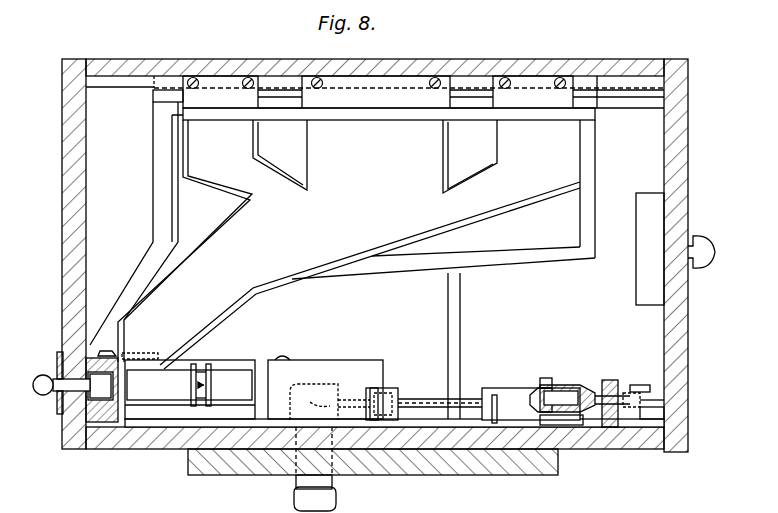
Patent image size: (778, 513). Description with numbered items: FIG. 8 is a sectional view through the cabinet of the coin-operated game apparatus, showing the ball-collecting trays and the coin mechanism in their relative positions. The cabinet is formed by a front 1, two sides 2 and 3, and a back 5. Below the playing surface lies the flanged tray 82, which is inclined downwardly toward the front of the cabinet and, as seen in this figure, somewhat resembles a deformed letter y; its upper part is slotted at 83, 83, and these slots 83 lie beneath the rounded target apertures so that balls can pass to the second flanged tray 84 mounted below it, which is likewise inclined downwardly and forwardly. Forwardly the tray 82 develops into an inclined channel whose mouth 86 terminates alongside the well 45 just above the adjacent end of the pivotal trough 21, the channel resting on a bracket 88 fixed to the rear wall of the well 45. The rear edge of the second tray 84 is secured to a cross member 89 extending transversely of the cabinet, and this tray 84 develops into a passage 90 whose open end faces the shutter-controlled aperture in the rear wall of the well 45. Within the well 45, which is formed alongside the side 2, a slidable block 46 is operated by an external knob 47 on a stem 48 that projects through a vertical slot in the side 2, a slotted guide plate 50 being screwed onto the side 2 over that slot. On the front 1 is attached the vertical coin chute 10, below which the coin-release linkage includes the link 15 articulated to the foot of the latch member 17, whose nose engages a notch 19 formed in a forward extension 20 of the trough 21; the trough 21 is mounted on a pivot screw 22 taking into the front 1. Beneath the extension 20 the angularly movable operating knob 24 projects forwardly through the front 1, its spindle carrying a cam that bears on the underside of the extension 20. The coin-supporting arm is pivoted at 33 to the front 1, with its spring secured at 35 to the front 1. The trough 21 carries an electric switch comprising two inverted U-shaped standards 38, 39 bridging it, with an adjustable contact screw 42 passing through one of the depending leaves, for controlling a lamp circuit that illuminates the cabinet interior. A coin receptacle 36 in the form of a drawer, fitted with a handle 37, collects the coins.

The front 1 is at (612, 433).
The side 2 is at (680, 137).
The side 3 is at (78, 160).
The back 5 is at (545, 70).
The coin chute 10 is at (570, 387).
The link 15 is at (417, 399).
The latch member 17 is at (388, 392).
The notch 19 is at (372, 388).
The forward extension 20 is at (320, 372).
The trough 21 is at (244, 366).
The pivot screw 22 is at (283, 356).
The operating knob 24 is at (334, 502).
The pivot 33 is at (604, 385).
The spring anchorage 35 is at (640, 385).
The coin receptacle 36 is at (489, 346).
The handle 37 is at (702, 252).
The standard 38 is at (214, 385).
The standard 39 is at (196, 370).
The adjustable contact screw 42 is at (204, 385).
The well 45 is at (108, 412).
The slidable block 46 is at (90, 408).
The knob 47 is at (60, 376).
The stem 48 is at (60, 400).
The guide plate 50 is at (60, 354).
The flanged tray 82 is at (356, 235).
The slot 83 is at (473, 152).
The second flanged tray 84 is at (430, 240).
The mouth 86 is at (187, 376).
The bracket 88 is at (103, 350).
The cross member 89 is at (120, 80).
The passage 90 is at (160, 270).